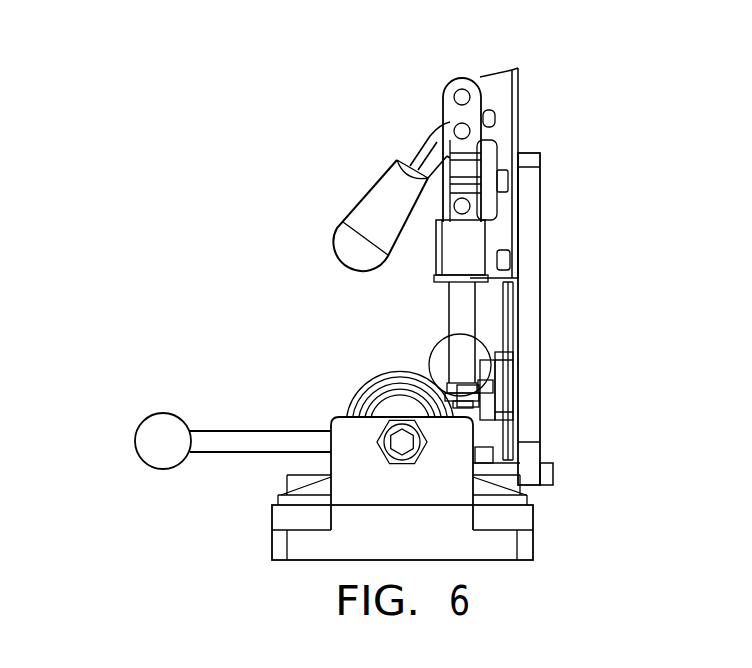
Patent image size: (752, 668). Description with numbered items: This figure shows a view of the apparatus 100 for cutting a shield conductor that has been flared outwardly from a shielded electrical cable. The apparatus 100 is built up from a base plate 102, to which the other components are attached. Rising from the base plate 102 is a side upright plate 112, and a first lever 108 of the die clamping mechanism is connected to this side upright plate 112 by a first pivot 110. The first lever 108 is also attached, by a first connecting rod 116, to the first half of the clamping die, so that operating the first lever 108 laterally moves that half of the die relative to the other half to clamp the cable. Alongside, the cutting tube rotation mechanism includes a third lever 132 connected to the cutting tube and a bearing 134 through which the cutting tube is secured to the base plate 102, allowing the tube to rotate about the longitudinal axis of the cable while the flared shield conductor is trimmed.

The apparatus 100 is at (596, 66).
The base plate 102 is at (527, 548).
The first lever 108 is at (360, 210).
The first pivot 110 is at (450, 130).
The side upright plate 112 is at (540, 342).
The first connecting rod 116 is at (468, 307).
The third lever 132 is at (153, 427).
The bearing 134 is at (393, 403).